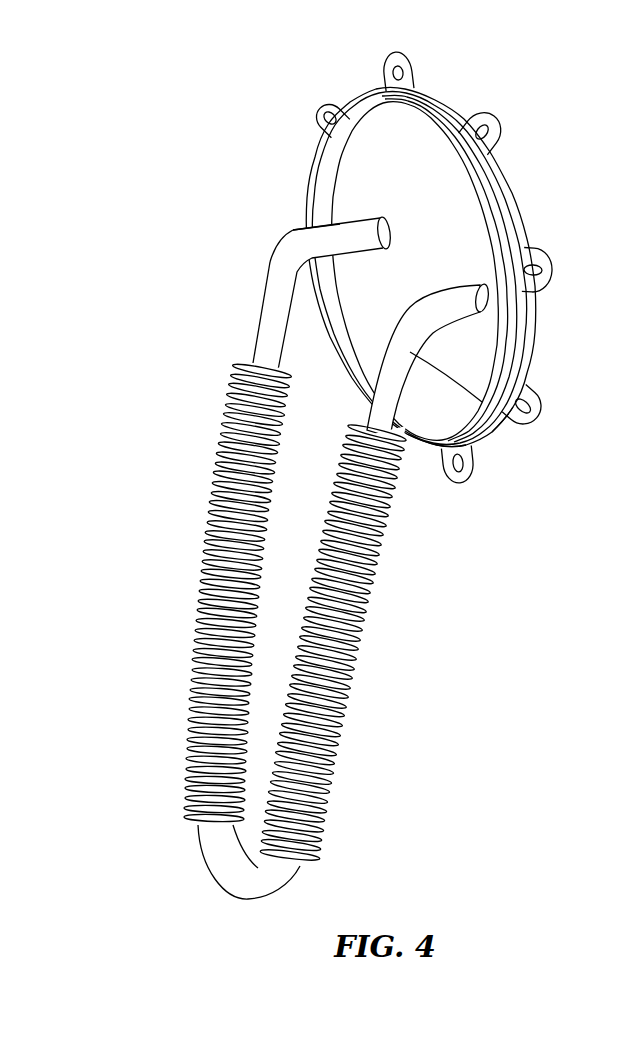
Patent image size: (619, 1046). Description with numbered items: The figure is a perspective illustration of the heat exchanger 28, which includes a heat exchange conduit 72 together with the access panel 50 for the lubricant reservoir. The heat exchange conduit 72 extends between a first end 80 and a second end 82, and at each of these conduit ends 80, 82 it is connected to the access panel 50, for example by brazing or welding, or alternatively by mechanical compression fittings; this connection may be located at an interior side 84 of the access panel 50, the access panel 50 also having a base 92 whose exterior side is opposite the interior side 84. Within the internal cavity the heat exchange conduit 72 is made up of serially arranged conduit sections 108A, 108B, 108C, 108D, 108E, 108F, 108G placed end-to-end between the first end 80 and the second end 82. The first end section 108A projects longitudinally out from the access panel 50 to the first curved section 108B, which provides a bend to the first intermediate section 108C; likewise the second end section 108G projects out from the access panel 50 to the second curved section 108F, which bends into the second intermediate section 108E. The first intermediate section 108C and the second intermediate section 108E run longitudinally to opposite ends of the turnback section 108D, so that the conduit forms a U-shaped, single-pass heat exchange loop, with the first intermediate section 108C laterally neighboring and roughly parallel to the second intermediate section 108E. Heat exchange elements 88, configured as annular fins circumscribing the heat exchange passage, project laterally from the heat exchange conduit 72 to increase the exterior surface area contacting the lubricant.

The heat exchanger 28 is at (285, 636).
The access panel 50 is at (405, 263).
The heat exchange conduit 72 is at (378, 357).
The first end of the heat exchange conduit 80 is at (482, 297).
The second end of the heat exchange conduit 82 is at (294, 270).
The interior side of the access panel 84 is at (392, 252).
The heat exchange elements 88 is at (233, 364).
The base of the access panel 92 is at (368, 157).
The first end section 108A is at (478, 346).
The first curved section 108B is at (505, 424).
The first intermediate section 108C is at (423, 440).
The turnback section 108D is at (235, 897).
The second intermediate section 108E is at (257, 298).
The second curved section 108F is at (273, 258).
The second end section 108G is at (310, 222).